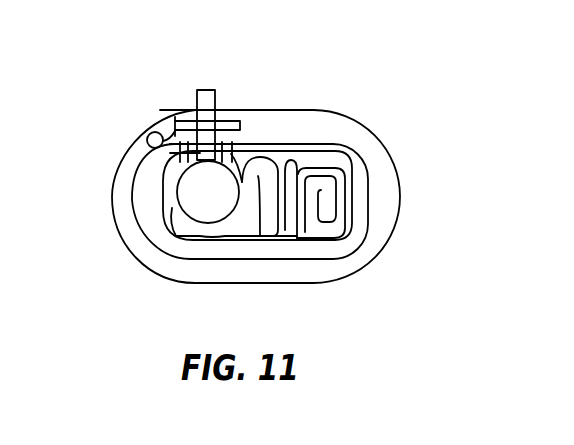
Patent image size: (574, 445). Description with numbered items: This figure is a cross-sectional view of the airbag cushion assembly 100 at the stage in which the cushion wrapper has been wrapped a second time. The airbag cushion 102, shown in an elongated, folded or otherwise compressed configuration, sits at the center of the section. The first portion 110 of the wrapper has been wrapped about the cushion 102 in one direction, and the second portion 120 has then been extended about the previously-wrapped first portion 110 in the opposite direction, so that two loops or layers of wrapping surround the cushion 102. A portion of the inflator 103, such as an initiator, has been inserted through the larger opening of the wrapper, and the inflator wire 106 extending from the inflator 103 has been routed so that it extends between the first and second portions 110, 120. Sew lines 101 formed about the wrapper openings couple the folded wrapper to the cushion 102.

The airbag cushion assembly 100 is at (296, 93).
The sew lines 101 is at (236, 120).
The airbag cushion 102 is at (350, 206).
The inflator 103 is at (199, 104).
The inflator wire 106 is at (147, 139).
The first portion 110 is at (333, 258).
The second portion 120 is at (383, 246).